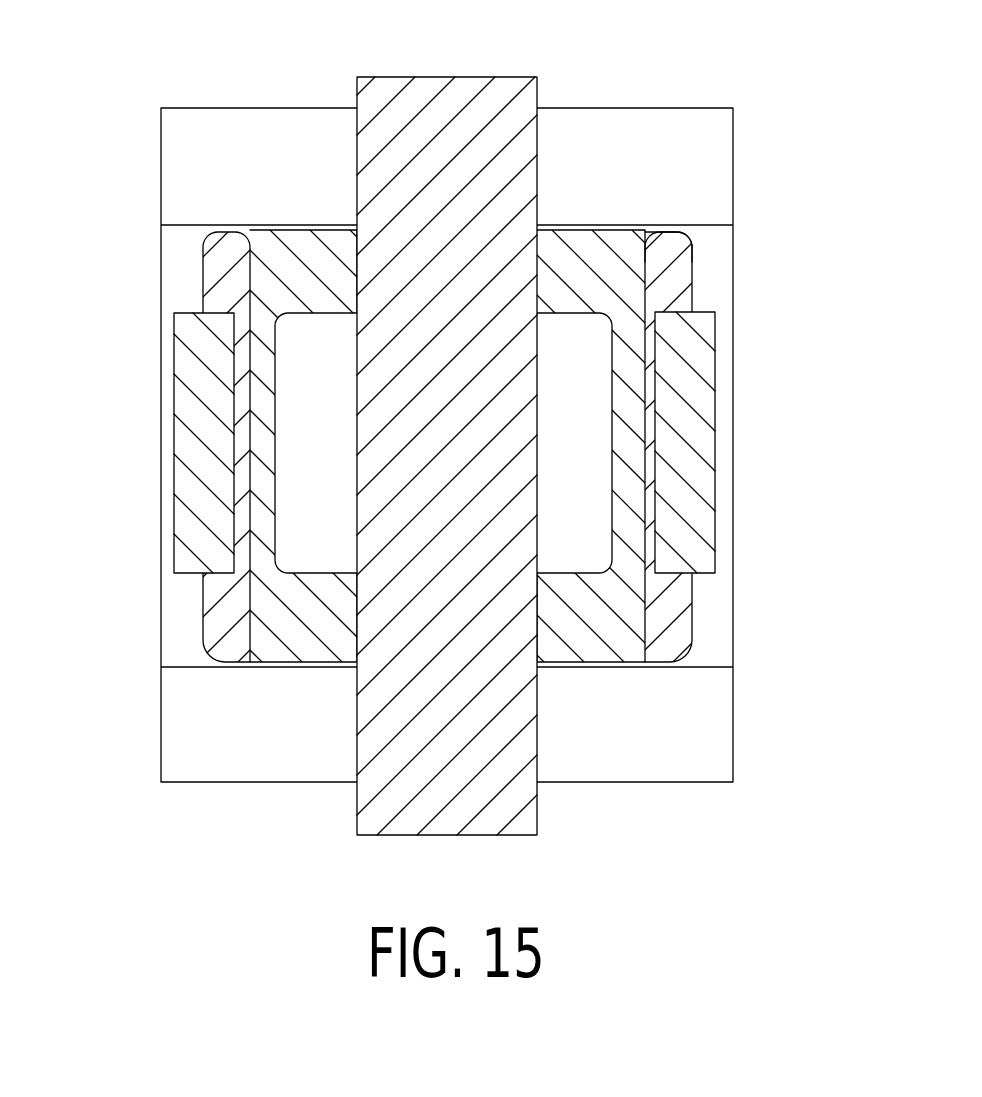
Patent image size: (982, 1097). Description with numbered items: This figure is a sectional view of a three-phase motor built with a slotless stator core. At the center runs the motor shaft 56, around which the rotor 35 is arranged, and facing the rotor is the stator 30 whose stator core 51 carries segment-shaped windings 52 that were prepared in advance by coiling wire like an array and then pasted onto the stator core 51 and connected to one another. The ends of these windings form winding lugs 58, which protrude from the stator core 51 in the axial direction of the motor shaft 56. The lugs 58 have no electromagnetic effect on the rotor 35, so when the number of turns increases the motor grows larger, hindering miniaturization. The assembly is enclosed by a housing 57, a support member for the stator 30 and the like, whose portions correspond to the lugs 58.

The stator 30 is at (450, 404).
The rotor 35 is at (327, 323).
The stator core 51 is at (177, 542).
The winding 52 is at (672, 623).
The motor shaft 56 is at (430, 83).
The housing 57 is at (722, 148).
The winding lug 58 is at (667, 243).